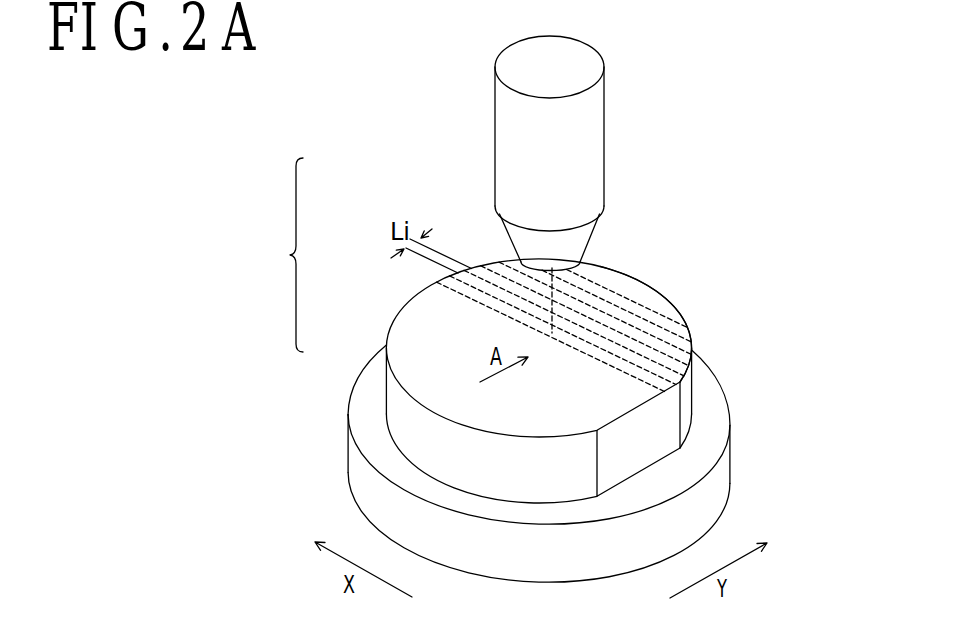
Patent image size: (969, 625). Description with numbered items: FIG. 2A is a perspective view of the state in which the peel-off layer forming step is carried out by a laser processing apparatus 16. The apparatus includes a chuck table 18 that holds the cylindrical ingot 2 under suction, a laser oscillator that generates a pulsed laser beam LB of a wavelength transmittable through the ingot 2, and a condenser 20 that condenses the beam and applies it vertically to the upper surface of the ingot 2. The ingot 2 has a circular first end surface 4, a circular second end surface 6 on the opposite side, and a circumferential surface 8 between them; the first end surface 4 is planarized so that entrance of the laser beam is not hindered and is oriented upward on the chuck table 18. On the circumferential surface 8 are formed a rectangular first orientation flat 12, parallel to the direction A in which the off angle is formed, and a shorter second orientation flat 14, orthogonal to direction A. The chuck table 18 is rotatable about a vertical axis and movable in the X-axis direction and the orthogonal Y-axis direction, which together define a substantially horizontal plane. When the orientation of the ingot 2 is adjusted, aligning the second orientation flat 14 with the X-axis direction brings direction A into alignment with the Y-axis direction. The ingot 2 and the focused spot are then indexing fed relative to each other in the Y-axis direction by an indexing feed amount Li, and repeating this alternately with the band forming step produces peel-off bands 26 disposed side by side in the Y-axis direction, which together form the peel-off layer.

The ingot 2 is at (539, 422).
The first end surface 4 is at (401, 330).
The second end surface 6 is at (392, 440).
The circumferential surface 8 is at (515, 477).
The first orientation flat 12 is at (637, 445).
The second orientation flat 14 is at (623, 273).
The laser processing apparatus 16 is at (285, 255).
The chuck table 18 is at (367, 380).
The condenser 20 is at (512, 177).
The peel-off bands 26 is at (675, 350).